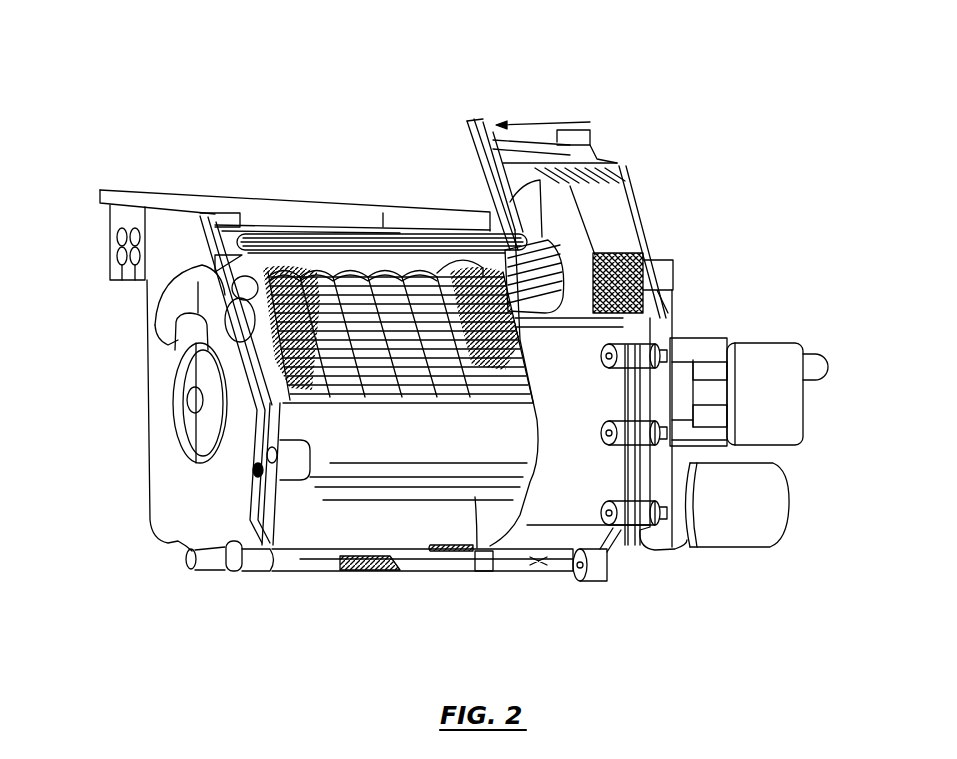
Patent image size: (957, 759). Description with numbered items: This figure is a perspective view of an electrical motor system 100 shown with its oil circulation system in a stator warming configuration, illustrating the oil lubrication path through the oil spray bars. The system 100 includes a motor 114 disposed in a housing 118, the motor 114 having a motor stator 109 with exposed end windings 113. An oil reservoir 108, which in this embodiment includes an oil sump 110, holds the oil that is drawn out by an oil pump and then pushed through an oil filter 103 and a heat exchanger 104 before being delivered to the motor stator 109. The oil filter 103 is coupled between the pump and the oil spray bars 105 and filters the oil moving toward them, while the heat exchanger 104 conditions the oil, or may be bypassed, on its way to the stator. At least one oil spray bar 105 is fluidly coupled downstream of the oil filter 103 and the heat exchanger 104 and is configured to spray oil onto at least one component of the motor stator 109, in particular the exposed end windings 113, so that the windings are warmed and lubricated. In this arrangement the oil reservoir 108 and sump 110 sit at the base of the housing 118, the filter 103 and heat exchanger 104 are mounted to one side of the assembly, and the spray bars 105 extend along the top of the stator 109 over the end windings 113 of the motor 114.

The electrical motor system 100 is at (755, 128).
The oil filter 103 is at (773, 503).
The heat exchanger 104 is at (760, 350).
The oil spray bar 105 is at (276, 226).
The oil reservoir 108 is at (328, 545).
The motor stator 109 is at (274, 225).
The oil sump 110 is at (398, 545).
The end winding 113 is at (150, 373).
The motor 114 is at (330, 210).
The housing 118 is at (148, 428).